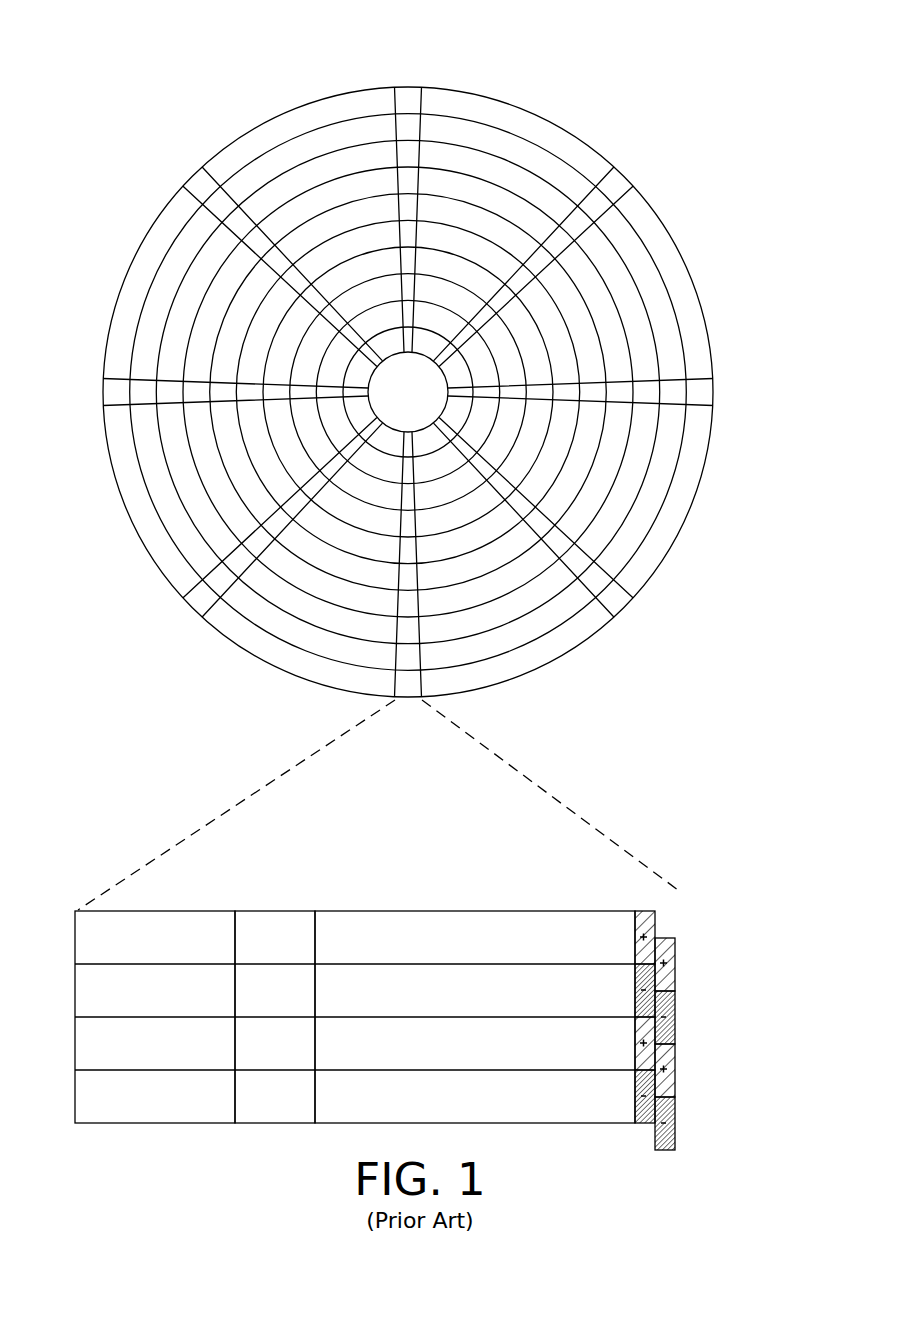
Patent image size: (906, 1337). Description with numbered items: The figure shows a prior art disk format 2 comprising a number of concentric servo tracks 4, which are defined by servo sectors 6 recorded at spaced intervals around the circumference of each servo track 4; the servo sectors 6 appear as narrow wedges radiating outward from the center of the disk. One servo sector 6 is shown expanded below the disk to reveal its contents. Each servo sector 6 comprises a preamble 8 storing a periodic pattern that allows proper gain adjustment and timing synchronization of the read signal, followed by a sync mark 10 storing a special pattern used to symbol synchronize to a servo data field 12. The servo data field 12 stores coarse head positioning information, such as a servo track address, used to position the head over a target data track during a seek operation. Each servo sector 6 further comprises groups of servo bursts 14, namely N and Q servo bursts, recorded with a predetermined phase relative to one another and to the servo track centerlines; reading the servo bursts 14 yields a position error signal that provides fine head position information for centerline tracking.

The disk format 2 is at (185, 93).
The servo tracks 4 is at (513, 150).
The servo sectors 6 is at (406, 403).
The preamble 8 is at (163, 911).
The sync mark 10 is at (280, 911).
The servo data field 12 is at (465, 911).
The servo bursts 14 is at (668, 910).